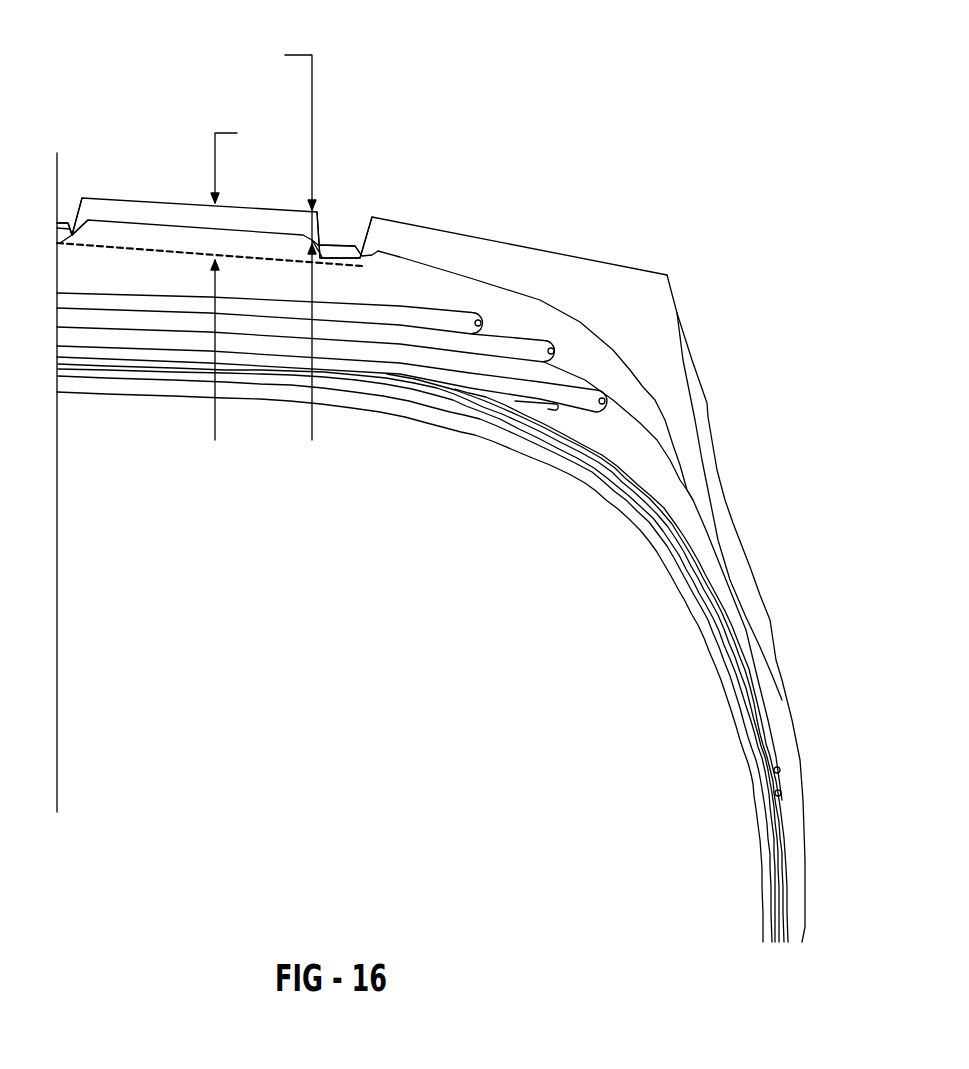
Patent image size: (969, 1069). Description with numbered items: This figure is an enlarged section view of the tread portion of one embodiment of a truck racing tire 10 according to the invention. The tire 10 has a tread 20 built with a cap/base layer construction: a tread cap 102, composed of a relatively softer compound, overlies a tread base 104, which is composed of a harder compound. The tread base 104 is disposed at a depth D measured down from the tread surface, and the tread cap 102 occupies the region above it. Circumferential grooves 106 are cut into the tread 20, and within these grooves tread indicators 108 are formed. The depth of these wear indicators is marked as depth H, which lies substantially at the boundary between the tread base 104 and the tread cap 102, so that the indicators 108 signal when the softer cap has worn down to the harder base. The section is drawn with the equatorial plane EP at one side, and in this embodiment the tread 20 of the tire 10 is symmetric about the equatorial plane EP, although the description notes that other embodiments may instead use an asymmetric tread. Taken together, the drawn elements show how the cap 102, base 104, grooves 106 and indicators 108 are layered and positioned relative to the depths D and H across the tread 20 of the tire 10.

The tire 10 is at (175, 105).
The tread 20 is at (442, 228).
The tread cap 102 is at (515, 267).
The tread base 104 is at (522, 320).
The circumferential grooves 106 is at (85, 197).
The tread indicators 108 is at (66, 223).
The depth D is at (237, 280).
The depth H is at (289, 240).
The equatorial plane EP is at (60, 502).